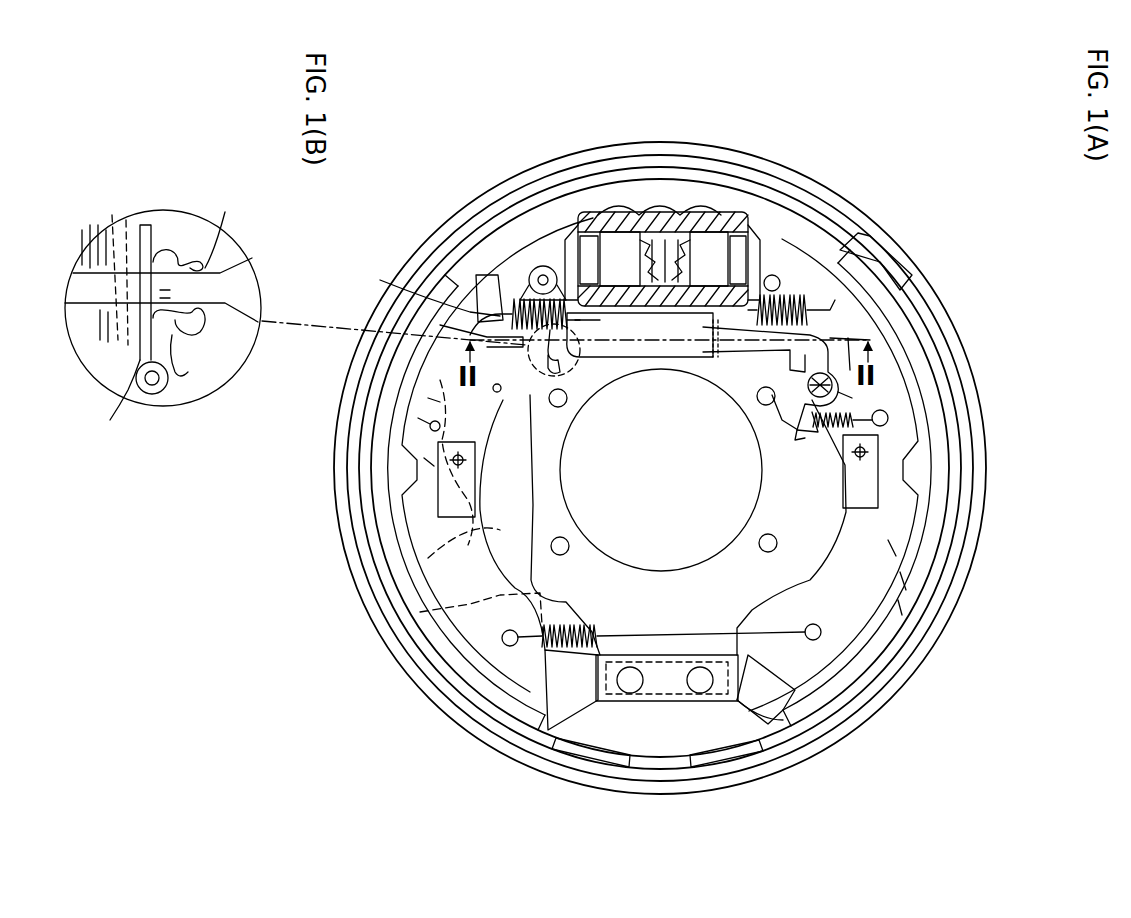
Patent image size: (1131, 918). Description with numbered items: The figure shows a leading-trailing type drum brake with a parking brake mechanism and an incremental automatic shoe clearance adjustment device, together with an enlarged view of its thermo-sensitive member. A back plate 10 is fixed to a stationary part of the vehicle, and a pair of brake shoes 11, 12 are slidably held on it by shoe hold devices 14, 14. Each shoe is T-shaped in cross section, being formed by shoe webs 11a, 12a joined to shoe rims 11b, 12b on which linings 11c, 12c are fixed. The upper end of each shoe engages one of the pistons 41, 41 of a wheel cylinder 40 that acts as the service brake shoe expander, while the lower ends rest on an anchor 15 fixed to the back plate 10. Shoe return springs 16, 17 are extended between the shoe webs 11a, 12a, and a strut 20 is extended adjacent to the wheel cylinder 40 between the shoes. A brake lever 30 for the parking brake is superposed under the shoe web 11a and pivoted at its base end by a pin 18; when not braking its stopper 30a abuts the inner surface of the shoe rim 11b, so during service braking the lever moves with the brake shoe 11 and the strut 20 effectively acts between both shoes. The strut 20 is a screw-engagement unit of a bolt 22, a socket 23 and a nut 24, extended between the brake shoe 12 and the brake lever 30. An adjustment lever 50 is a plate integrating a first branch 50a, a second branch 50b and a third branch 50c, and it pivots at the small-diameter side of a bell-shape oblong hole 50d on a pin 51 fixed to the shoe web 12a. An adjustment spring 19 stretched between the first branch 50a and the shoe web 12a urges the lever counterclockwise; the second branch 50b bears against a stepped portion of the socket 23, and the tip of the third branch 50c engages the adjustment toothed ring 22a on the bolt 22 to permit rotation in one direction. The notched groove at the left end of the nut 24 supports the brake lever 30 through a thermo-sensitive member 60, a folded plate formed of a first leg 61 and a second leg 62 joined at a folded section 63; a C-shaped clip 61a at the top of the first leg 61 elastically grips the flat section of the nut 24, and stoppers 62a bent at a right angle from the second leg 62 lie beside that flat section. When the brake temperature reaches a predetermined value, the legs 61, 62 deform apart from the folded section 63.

In FIG. 1A, the back plate 10 is at (765, 152).
In FIG. 1A, the brake shoe 11 is at (428, 318).
In FIG. 1A, the shoe web 11a is at (430, 400).
In FIG. 1A, the shoe rim 11b is at (420, 420).
In FIG. 1A, the lining 11c is at (430, 462).
In FIG. 1A, the brake shoe 12 is at (905, 330).
In FIG. 1A, the shoe web 12a is at (893, 548).
In FIG. 1A, the shoe rim 12b is at (903, 580).
In FIG. 1A, the lining 12c is at (903, 608).
In FIG. 1A, the shoe hold device 14 is at (436, 478).
In FIG. 1A, the anchor 15 is at (700, 708).
In FIG. 1A, the shoe return spring 16 is at (502, 290).
In FIG. 1A, the shoe return spring 17 is at (530, 695).
In FIG. 1A, the pin 18 is at (540, 266).
In FIG. 1A, the adjustment spring 19 is at (890, 416).
In FIG. 1A, the strut 20 is at (628, 390).
In FIG. 1A, the bolt 22 is at (628, 360).
In FIG. 1A, the adjustment toothed ring 22a is at (714, 358).
In FIG. 1A, the socket 23 is at (760, 330).
In FIG. 1A, the nut 24 is at (560, 340).
In FIG. 1B, the nut 24 is at (232, 272).
In FIG. 1A, the brake lever 30 is at (470, 540).
In FIG. 1B, the brake lever 30 is at (80, 338).
In FIG. 1A, the stopper 30a is at (480, 617).
In FIG. 1A, the wheel cylinder 40 is at (670, 200).
In FIG. 1A, the piston 41 is at (605, 232).
In FIG. 1A, the adjustment lever 50 is at (788, 440).
In FIG. 1A, the first branch 50a is at (800, 435).
In FIG. 1A, the second branch 50b is at (882, 262).
In FIG. 1A, the third branch 50c is at (778, 410).
In FIG. 1A, the bell-shape oblong hole 50d is at (850, 392).
In FIG. 1A, the pin 51 is at (875, 338).
In FIG. 1A, the thermo-sensitive member 60 is at (556, 378).
In FIG. 1B, the thermo-sensitive member 60 is at (170, 240).
In FIG. 1B, the first leg 61 is at (183, 360).
In FIG. 1B, the clip 61a is at (226, 215).
In FIG. 1B, the second leg 62 is at (118, 400).
In FIG. 1B, the stopper 62a is at (112, 212).
In FIG. 1B, the folded section 63 is at (152, 396).